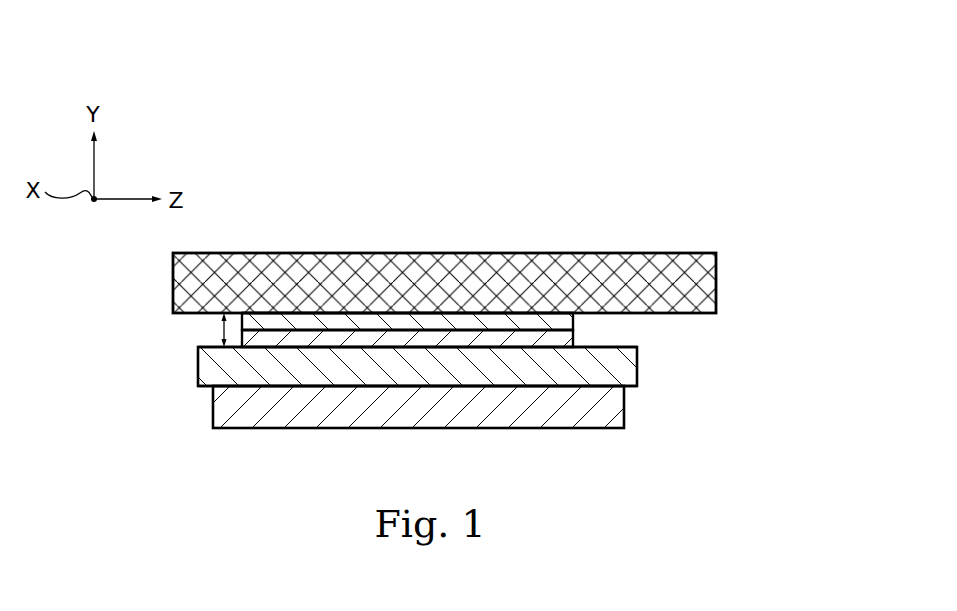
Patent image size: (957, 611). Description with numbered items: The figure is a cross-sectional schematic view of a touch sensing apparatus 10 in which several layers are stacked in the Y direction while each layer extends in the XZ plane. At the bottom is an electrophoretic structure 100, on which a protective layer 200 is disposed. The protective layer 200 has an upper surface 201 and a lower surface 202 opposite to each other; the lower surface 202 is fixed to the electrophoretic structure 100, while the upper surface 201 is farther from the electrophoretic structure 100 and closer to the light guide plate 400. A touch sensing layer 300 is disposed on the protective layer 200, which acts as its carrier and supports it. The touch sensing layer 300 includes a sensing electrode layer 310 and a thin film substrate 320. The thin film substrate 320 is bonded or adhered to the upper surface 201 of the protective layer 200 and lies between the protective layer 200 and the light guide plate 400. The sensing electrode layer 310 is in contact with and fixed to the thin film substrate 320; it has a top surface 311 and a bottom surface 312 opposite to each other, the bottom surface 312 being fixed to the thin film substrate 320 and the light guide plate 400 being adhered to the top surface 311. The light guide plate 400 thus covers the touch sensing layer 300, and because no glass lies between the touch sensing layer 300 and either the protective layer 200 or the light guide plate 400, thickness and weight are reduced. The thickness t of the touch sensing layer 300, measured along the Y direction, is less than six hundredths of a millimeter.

The touch sensing apparatus 10 is at (97, 48).
The electrophoretic structure 100 is at (608, 412).
The protective layer 200 is at (622, 368).
The upper surface 201 is at (203, 346).
The lower surface 202 is at (203, 388).
The touch sensing layer 300 is at (480, 293).
The sensing electrode layer 310 is at (525, 322).
The top surface 311 is at (453, 312).
The bottom surface 312 is at (487, 332).
The thin film substrate 320 is at (550, 340).
The light guide plate 400 is at (702, 292).